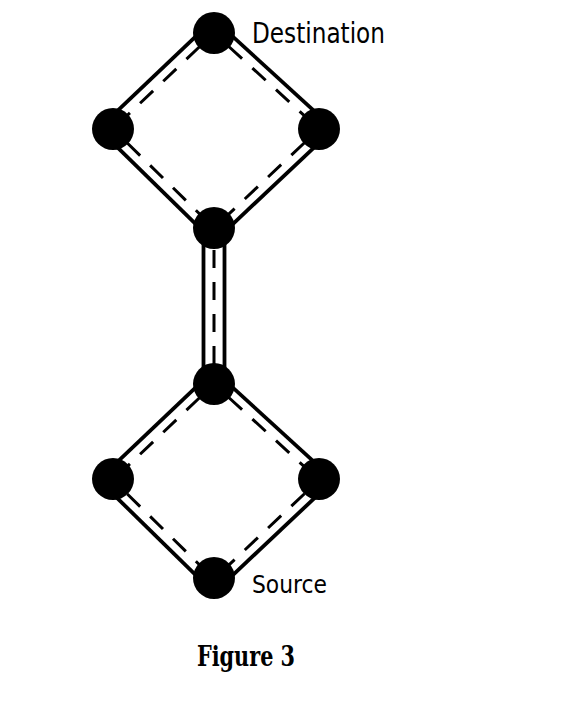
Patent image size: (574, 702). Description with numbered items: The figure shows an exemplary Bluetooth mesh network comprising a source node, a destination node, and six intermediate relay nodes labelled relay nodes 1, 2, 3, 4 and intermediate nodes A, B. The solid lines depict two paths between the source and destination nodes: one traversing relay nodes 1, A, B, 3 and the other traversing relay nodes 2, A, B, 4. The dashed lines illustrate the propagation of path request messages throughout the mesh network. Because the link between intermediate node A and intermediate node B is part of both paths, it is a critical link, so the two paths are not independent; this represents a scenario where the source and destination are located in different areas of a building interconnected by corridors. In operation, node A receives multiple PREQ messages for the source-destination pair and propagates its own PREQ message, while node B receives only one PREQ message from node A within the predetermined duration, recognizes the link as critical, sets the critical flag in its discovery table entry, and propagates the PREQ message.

The relay node 1 is at (90, 479).
The relay node 2 is at (335, 479).
The relay node 3 is at (89, 129).
The relay node 4 is at (338, 129).
The intermediate node A is at (228, 384).
The intermediate node B is at (227, 228).